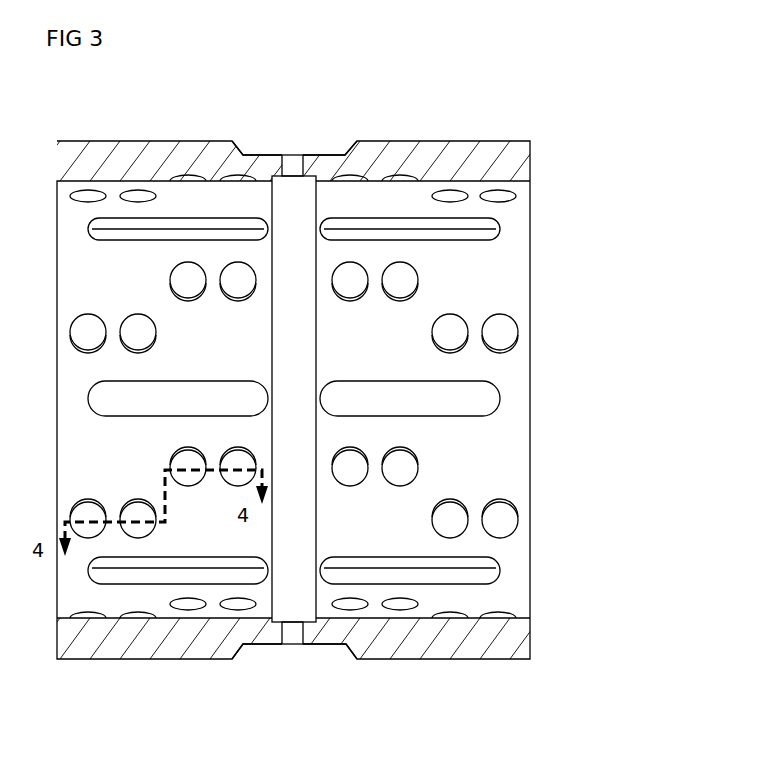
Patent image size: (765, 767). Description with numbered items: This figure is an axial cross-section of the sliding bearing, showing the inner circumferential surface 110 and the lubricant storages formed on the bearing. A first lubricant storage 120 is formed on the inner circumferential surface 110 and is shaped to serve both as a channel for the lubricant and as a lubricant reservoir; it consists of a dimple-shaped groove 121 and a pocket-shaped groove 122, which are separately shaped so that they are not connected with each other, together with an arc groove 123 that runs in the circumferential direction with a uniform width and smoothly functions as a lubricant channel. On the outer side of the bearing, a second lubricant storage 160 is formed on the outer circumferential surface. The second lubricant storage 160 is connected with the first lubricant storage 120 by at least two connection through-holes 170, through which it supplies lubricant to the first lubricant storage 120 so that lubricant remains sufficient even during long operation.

The inner circumferential surface 110 is at (505, 290).
The first lubricant storage 120 is at (371, 399).
The dimple-shaped groove 121 is at (500, 520).
The pocket-shaped groove 122 is at (616, 527).
The arc groove 123 is at (295, 440).
The second lubricant storage 160 is at (255, 153).
The connection through-hole 170 is at (293, 170).